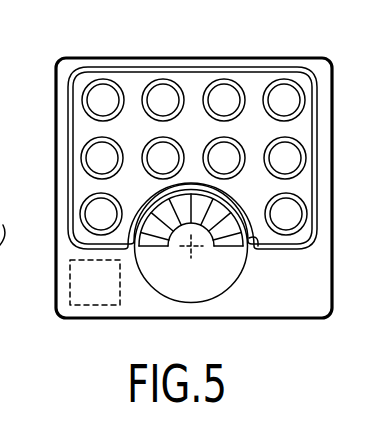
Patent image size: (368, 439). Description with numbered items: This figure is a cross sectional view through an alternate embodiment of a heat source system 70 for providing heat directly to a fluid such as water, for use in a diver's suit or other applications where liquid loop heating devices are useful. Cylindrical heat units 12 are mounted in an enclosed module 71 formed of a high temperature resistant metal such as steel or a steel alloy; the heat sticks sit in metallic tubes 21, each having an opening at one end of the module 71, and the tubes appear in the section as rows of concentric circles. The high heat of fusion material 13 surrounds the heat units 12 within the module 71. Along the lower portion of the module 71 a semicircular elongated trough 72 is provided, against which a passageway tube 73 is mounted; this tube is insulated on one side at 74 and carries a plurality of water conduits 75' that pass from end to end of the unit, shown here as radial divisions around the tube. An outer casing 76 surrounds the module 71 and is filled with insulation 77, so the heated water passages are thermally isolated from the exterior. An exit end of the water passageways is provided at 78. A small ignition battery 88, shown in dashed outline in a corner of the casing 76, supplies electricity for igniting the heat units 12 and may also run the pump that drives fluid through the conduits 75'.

The heat source system 70 is at (168, 174).
The outer casing 76 is at (307, 319).
The insulation 77 is at (63, 101).
The enclosed module 71 is at (180, 66).
The high heat of fusion material 13 is at (135, 84).
The cylindrical heat unit 12 is at (223, 97).
The metallic tube 21 is at (291, 84).
The passageway tube 73 is at (226, 282).
The water conduits 75' is at (184, 251).
The insulation on passageway tube 74 is at (190, 287).
The semicircular elongated trough 72 is at (256, 241).
The ignition battery 88 is at (88, 304).
The exit end of water passageways 78 is at (3, 226).